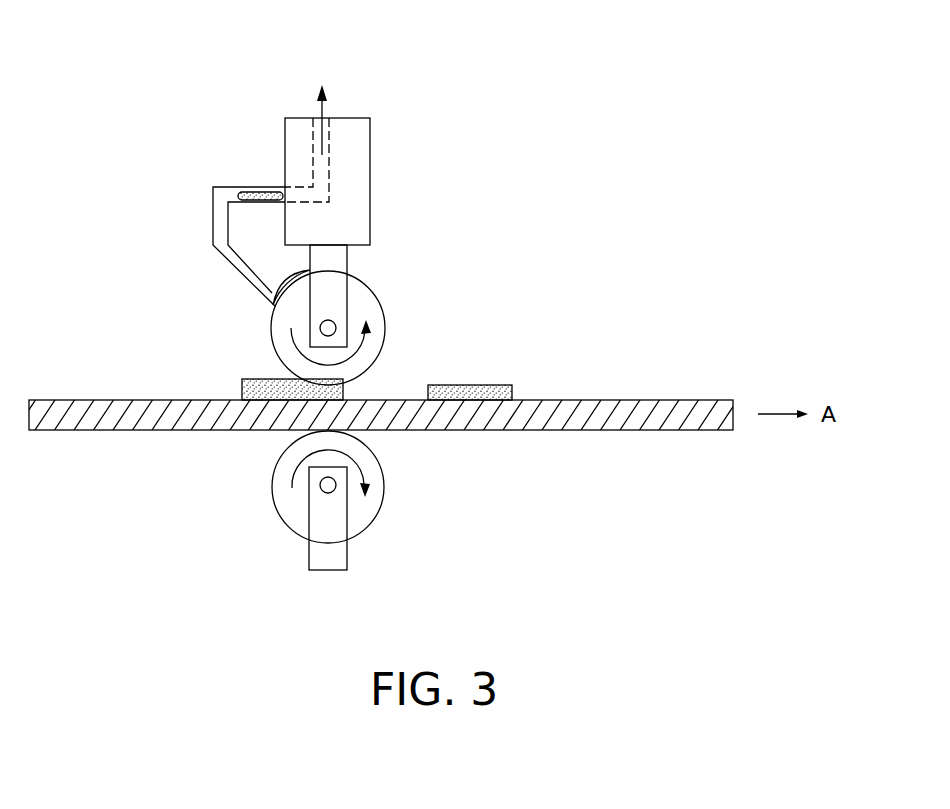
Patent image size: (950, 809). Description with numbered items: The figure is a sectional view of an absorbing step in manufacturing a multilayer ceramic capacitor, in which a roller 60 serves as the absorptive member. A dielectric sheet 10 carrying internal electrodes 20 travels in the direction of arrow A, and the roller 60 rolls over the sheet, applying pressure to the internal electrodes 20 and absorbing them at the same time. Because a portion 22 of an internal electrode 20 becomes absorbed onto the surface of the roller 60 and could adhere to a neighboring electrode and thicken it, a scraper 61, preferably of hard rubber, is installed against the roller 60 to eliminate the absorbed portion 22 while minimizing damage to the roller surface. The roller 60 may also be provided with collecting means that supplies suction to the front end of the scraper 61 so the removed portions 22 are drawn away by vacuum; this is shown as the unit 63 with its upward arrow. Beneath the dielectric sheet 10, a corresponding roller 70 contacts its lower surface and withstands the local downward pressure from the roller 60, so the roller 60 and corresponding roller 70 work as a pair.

The dielectric sheet 10 is at (643, 429).
The internal electrode 20 is at (241, 393).
The absorbed portion of internal electrode 22 is at (287, 278).
The roller 60 is at (367, 302).
The scraper 61 is at (243, 276).
The material supply unit 63 is at (365, 167).
The corresponding roller 70 is at (377, 510).